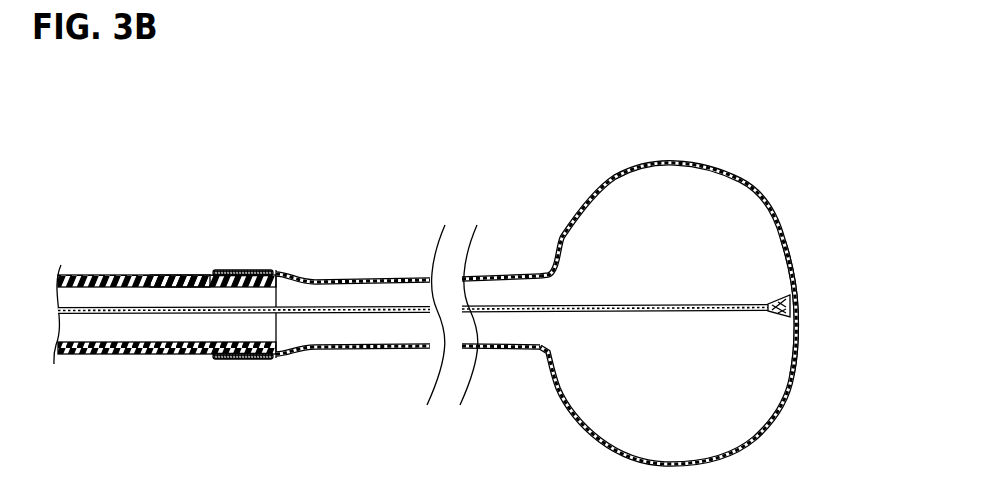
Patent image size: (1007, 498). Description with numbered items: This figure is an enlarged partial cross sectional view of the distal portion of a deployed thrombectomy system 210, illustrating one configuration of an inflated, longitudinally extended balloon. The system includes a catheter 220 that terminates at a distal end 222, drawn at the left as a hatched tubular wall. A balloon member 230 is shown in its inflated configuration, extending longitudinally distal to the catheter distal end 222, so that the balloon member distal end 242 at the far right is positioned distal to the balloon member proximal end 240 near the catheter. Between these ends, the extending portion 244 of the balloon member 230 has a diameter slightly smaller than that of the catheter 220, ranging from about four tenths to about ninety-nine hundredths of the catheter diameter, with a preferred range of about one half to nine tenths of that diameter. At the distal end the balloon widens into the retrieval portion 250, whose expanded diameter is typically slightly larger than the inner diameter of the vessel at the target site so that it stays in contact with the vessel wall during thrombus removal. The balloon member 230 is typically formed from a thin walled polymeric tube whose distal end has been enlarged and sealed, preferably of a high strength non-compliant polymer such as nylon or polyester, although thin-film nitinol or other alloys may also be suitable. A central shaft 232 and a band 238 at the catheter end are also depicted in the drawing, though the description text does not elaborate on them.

The thrombectomy system 210 is at (565, 98).
The catheter 220 is at (92, 277).
The distal end 222 is at (168, 277).
The marker band 238 is at (248, 270).
The inner shaft 232 is at (118, 314).
The balloon member proximal end 240 is at (323, 348).
The extending portion 244 is at (397, 348).
The balloon member 230 is at (493, 348).
The retrieval portion 250 is at (560, 388).
The balloon member distal end 242 is at (792, 387).